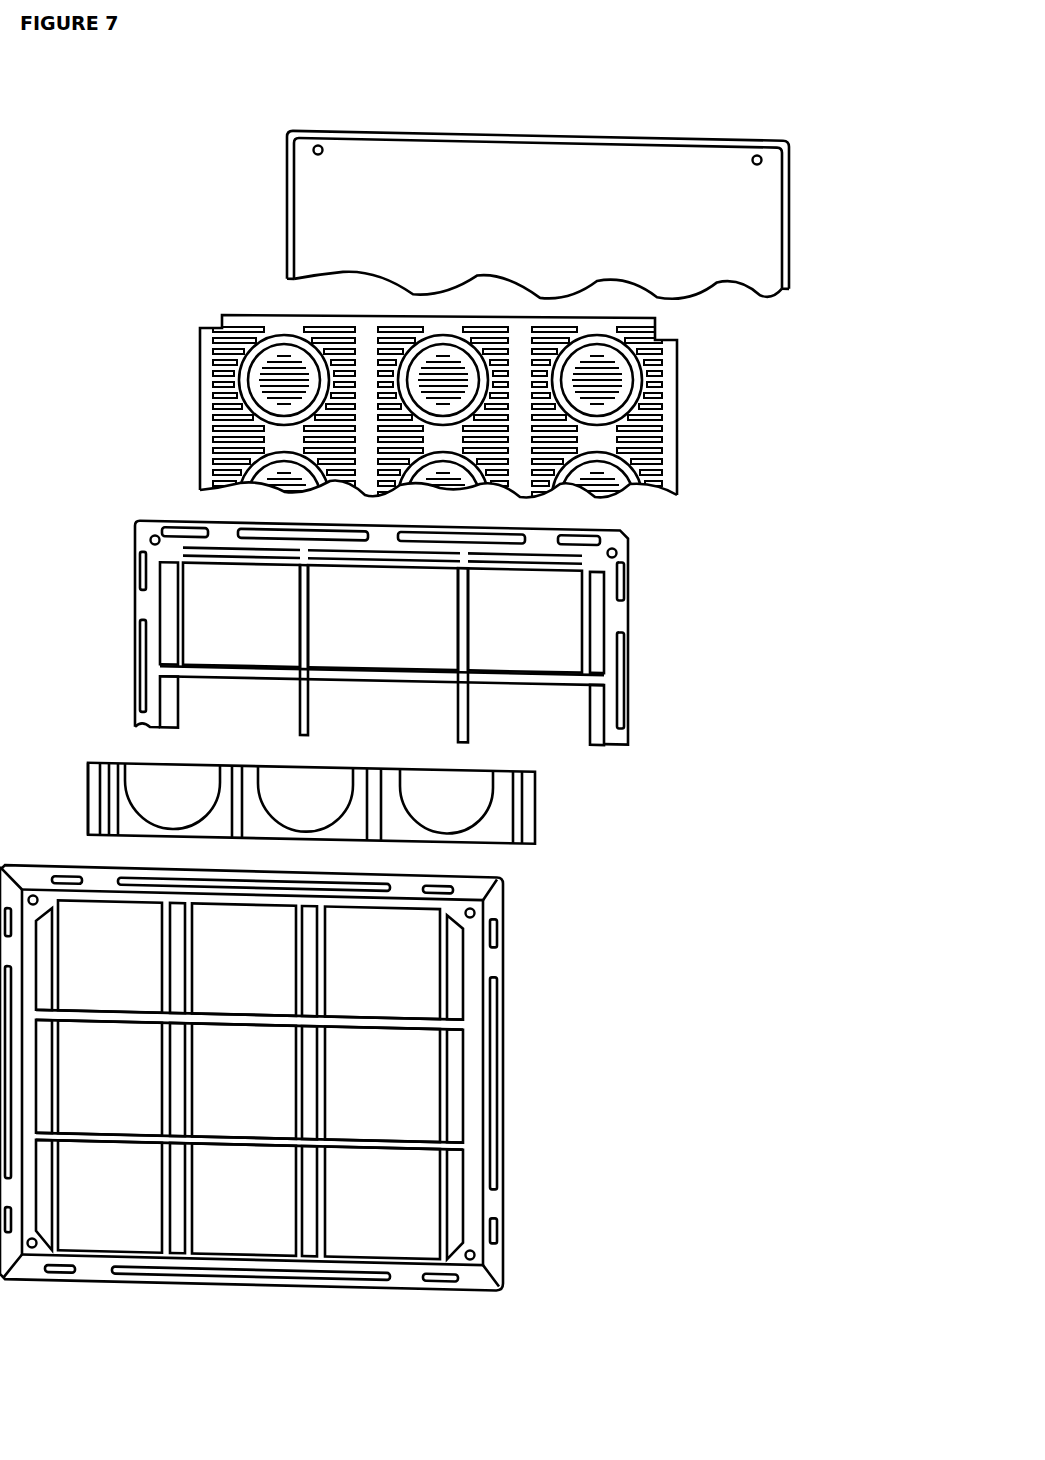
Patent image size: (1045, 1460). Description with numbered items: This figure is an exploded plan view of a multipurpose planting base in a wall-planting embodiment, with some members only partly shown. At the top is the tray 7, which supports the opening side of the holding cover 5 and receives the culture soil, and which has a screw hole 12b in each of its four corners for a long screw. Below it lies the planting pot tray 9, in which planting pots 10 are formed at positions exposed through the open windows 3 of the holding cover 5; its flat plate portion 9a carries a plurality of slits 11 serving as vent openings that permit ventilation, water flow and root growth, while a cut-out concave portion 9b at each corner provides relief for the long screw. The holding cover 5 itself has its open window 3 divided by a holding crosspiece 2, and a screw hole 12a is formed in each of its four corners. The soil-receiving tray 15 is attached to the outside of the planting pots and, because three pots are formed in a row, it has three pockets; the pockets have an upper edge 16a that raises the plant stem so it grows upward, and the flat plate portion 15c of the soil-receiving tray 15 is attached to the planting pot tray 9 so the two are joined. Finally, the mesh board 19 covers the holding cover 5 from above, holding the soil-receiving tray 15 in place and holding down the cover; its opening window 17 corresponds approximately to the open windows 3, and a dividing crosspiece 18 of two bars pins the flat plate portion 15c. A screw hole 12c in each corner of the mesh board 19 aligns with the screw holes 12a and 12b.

The holding crosspiece 2 is at (306, 628).
The open window 3 is at (208, 622).
The holding cover 5 is at (403, 632).
The tray 7 is at (769, 226).
The planting pot tray 9 is at (448, 397).
The flat plate portion 9a is at (362, 363).
The cut-out concave portion 9b is at (664, 336).
The planting pot 10 is at (640, 372).
The slit 11 is at (222, 401).
The screw hole 12a is at (617, 553).
The screw hole 12b is at (762, 158).
The screw hole 12c is at (475, 914).
The soil-receiving tray 15 is at (313, 779).
The flat plate portion 15c is at (132, 825).
The upper edge 16a is at (150, 763).
The opening window 17 is at (436, 1094).
The dividing crosspiece 18 is at (292, 969).
The mesh board 19 is at (299, 1078).